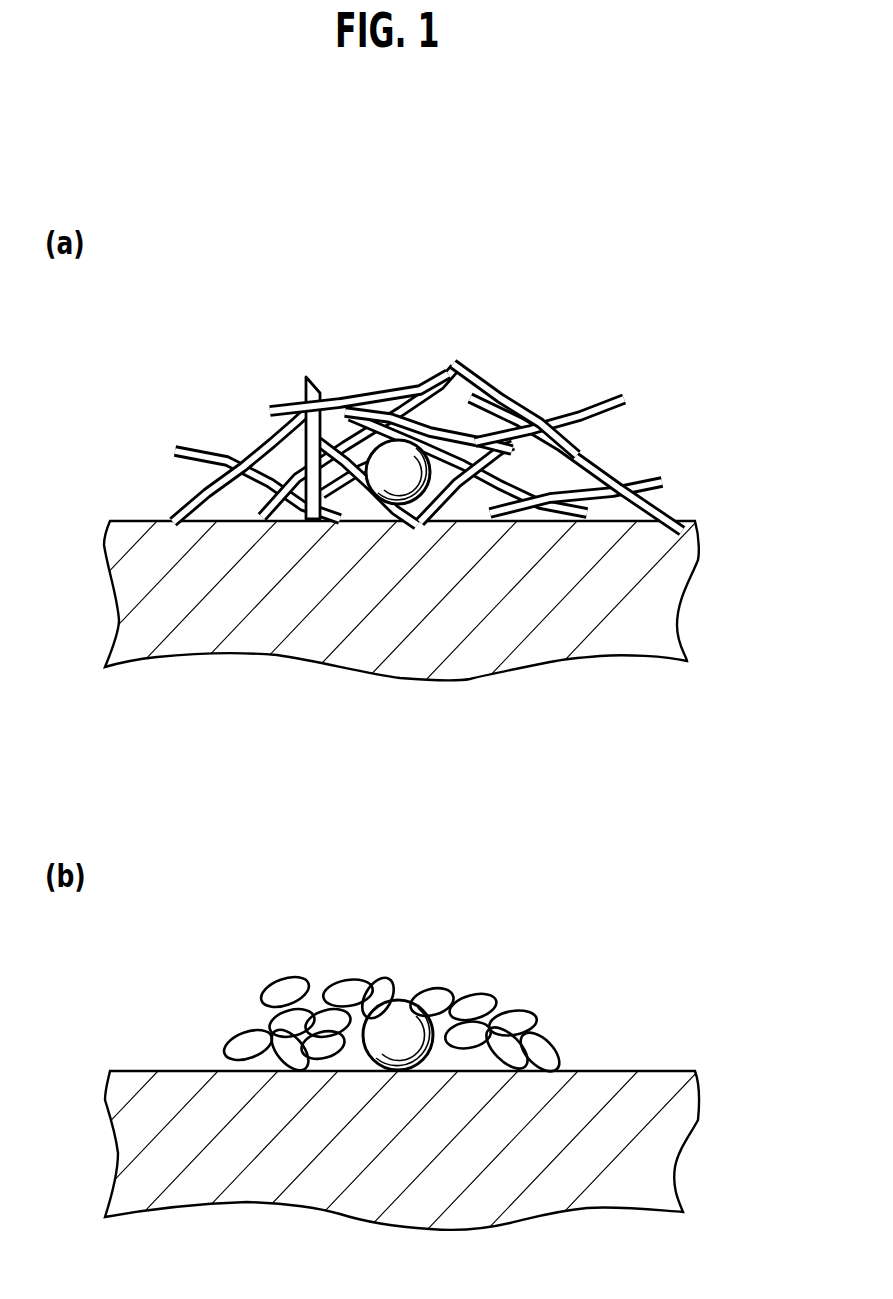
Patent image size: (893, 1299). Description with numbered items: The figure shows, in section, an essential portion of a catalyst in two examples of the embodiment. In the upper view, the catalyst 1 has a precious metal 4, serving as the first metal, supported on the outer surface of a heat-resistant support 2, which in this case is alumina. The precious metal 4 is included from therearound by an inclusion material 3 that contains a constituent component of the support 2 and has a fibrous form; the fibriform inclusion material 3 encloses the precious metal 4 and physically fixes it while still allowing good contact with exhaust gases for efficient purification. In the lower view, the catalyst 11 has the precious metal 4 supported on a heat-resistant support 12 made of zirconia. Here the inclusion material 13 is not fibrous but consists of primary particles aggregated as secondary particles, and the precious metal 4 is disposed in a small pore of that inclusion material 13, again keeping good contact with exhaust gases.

The catalyst 1 is at (440, 370).
The heat-resistant support 2 is at (673, 589).
The inclusion material 3 is at (607, 477).
The precious metal 4 is at (407, 453).
The catalyst 11 is at (447, 930).
The heat-resistant support 12 is at (673, 1131).
The inclusion material 13 is at (540, 1017).